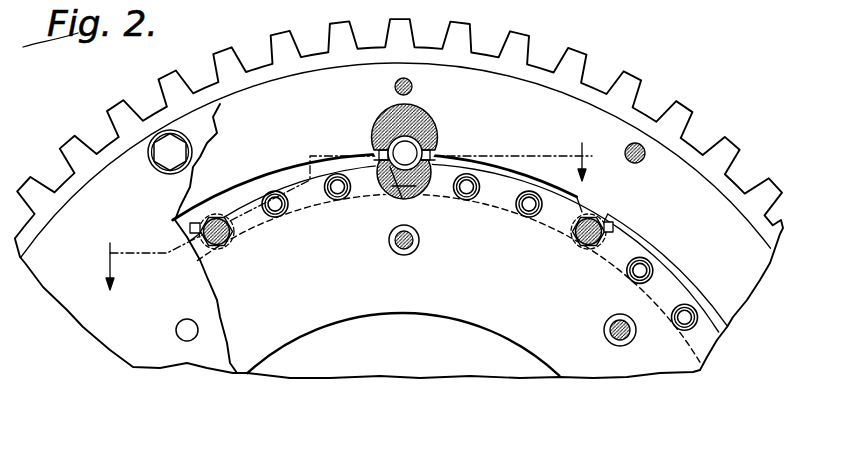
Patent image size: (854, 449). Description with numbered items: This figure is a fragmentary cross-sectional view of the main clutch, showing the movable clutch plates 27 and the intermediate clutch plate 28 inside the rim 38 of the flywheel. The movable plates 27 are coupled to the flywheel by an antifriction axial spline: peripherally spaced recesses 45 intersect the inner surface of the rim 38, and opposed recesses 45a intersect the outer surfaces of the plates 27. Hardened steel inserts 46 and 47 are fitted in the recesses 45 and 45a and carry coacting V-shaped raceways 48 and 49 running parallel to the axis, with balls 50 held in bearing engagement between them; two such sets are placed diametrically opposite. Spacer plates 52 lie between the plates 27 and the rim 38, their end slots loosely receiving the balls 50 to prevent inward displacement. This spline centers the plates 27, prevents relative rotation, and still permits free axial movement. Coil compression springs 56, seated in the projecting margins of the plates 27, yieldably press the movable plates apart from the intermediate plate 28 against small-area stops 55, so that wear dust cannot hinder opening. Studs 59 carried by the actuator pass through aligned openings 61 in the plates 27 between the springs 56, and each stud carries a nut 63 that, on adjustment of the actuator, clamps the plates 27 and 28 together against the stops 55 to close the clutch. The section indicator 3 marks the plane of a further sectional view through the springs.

The section line 3- 3 is at (349, 214).
The movable clutch plates 27 is at (325, 318).
The intermediate clutch plate 28 is at (518, 371).
The rim 38 is at (640, 122).
The recesses 45 is at (404, 173).
The recesses 45a is at (422, 185).
The hardened steel insert 46 is at (410, 126).
The hardened steel insert 47 is at (385, 181).
The V-shaped raceway 48 is at (397, 138).
The V-shaped raceway 49 is at (394, 201).
The balls 50 is at (426, 146).
The spacer plates 52 is at (387, 143).
The stops 55 is at (413, 253).
The coil compression springs 56 is at (328, 180).
The studs 59 is at (222, 246).
The openings 61 is at (190, 227).
The nut 63 is at (207, 217).